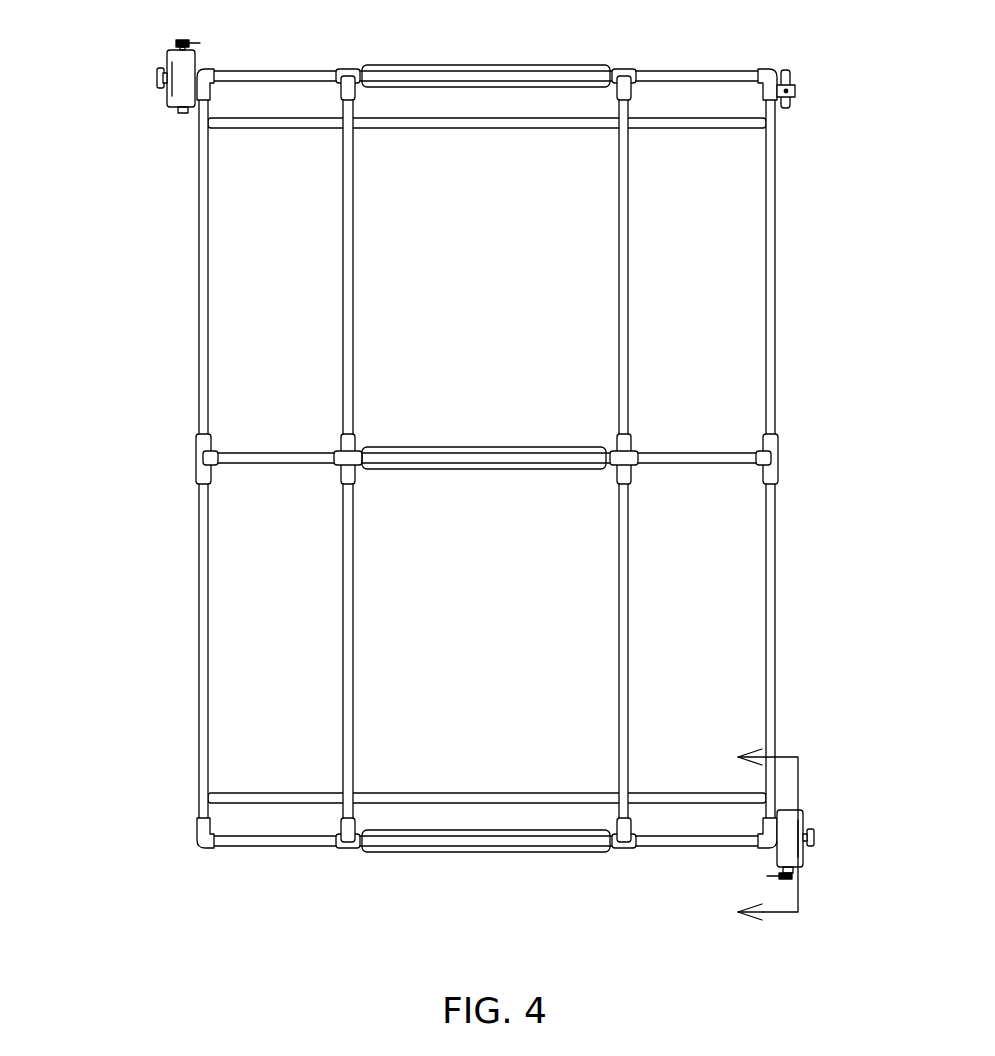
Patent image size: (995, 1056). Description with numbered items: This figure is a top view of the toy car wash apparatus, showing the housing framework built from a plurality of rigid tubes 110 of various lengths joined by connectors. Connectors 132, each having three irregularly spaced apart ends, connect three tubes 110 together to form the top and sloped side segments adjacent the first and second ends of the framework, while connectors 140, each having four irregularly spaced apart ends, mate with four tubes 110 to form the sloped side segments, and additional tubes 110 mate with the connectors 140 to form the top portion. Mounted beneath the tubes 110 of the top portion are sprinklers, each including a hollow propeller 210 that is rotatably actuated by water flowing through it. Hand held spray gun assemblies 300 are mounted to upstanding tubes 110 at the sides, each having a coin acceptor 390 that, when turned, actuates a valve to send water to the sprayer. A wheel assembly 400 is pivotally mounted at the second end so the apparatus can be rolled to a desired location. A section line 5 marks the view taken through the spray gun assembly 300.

The rigid tube 110 is at (310, 70).
The connector 132 is at (205, 72).
The connector 140 is at (200, 458).
The hollow propeller 210 is at (420, 66).
The hand held spray gun assembly 300 is at (148, 58).
The coin acceptor 390 is at (157, 78).
The wheel assembly 400 is at (800, 118).
The section line 5- 5 is at (785, 836).